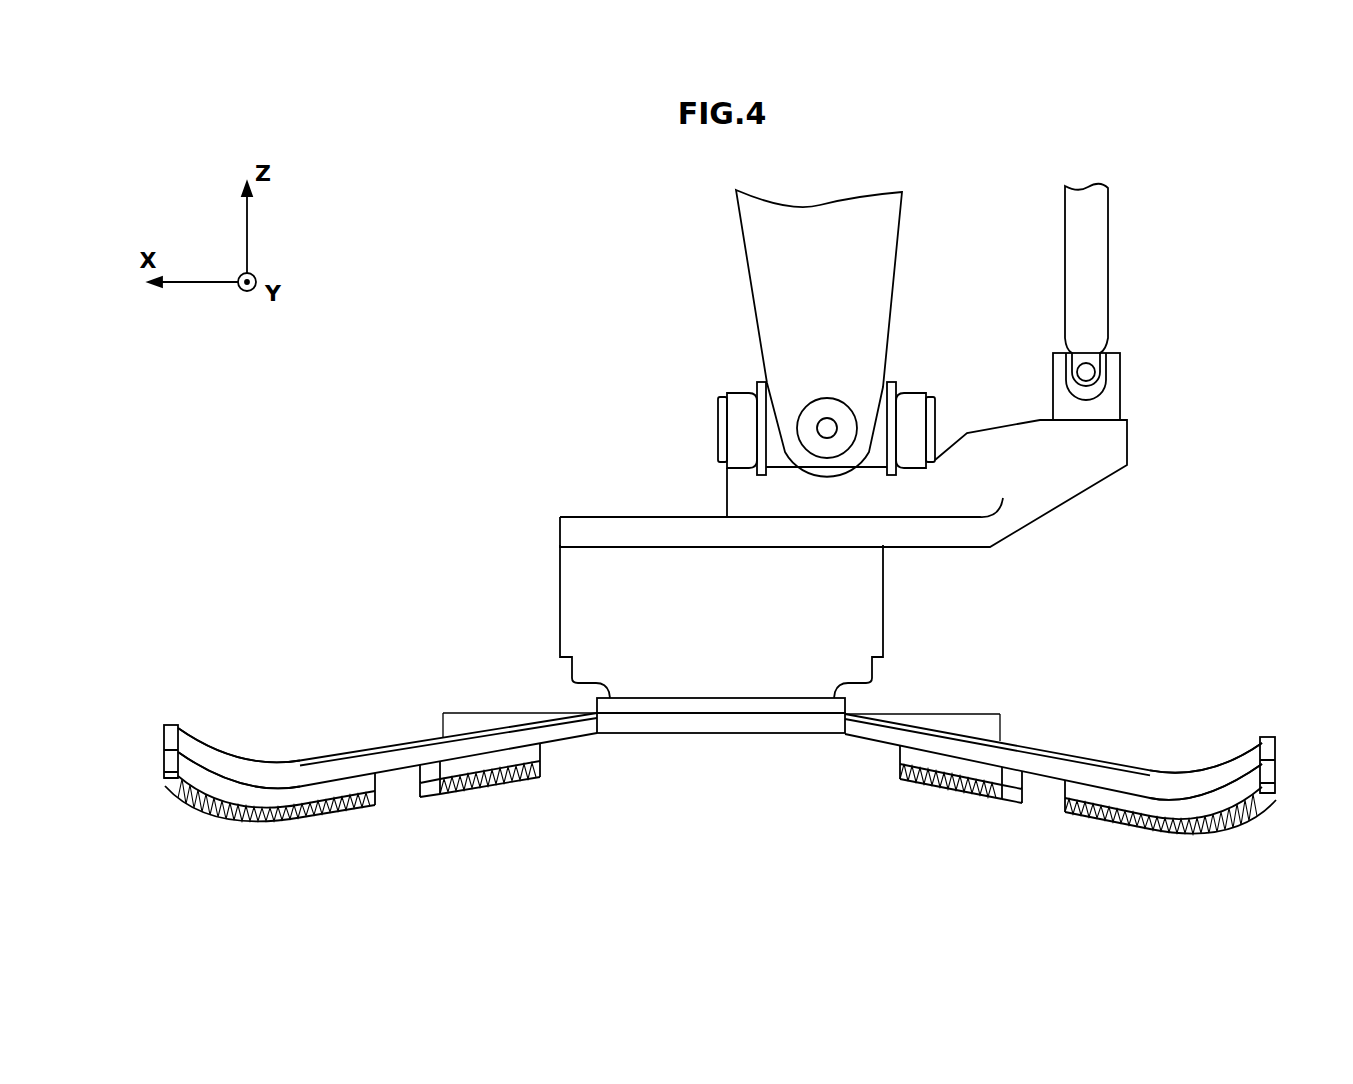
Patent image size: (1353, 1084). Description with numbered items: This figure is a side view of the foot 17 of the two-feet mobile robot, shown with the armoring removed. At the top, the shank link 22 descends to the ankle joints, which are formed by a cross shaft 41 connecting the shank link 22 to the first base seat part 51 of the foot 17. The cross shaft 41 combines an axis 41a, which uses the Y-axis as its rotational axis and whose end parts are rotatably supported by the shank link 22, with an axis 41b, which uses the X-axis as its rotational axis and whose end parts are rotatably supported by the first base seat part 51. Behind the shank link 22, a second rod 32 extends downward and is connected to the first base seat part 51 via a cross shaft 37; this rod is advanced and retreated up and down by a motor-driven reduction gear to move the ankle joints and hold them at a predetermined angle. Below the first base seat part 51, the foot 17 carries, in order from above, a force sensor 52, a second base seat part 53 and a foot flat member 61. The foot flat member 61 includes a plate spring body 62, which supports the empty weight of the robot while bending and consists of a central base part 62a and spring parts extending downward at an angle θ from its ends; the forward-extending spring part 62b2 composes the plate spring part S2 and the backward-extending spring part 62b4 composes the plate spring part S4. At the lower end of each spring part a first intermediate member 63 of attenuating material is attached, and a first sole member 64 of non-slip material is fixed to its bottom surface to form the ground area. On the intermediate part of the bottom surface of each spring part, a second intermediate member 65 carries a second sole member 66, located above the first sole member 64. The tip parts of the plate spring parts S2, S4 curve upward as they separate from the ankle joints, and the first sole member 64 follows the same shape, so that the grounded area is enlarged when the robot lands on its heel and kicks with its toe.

The foot 17 is at (462, 543).
The shank link 22 is at (773, 240).
The second rod 32 is at (1110, 217).
The cross shaft 37 is at (1100, 353).
The cross shaft 41 is at (603, 350).
The axis 41a is at (820, 410).
The axis 41b is at (738, 420).
The first base seat part 51 is at (737, 490).
The force sensor 52 is at (570, 633).
The second base seat part 53 is at (577, 670).
The foot flat member 61 is at (428, 700).
The plate spring body 62 is at (570, 732).
The base part 62a is at (722, 737).
The spring part 62b2 is at (178, 735).
The spring part 62b4 is at (1270, 747).
The first intermediate member 63 is at (178, 760).
The first sole member 64 is at (168, 783).
The second intermediate member 65 is at (420, 776).
The second sole member 66 is at (488, 800).
The plate spring part S2 is at (315, 697).
The plate spring part S4 is at (1128, 700).